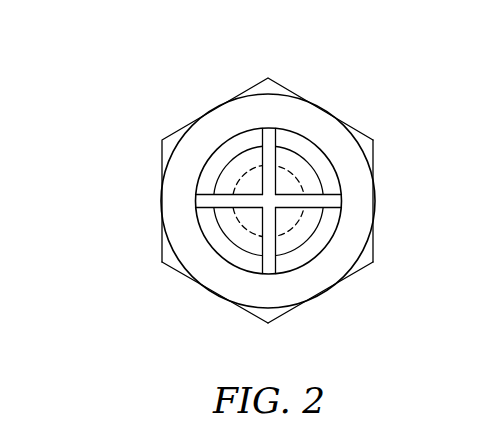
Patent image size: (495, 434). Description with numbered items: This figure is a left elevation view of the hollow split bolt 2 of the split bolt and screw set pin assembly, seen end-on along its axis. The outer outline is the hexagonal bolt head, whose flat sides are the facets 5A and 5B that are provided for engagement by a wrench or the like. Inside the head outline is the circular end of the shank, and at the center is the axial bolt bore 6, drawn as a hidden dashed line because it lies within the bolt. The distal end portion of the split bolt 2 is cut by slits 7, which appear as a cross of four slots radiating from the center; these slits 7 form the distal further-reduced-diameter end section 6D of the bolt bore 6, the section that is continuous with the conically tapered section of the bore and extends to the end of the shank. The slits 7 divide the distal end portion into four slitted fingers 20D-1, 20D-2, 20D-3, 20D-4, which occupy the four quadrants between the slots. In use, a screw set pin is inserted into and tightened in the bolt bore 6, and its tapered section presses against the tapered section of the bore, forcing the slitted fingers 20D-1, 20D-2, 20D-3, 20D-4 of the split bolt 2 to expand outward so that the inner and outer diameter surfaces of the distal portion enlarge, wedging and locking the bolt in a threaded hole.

The split bolt 2 is at (162, 86).
The facets 5A is at (245, 310).
The hexagon side face 5B is at (369, 150).
The bolt bore 6 is at (294, 227).
The distal further-reduced-diameter end section 6D is at (267, 170).
The slits 7 is at (276, 136).
The slitted finger 20D-1 is at (322, 168).
The slitted finger 20D-2 is at (288, 260).
The slitted finger 20D-3 is at (222, 240).
The slitted finger 20D-4 is at (217, 163).